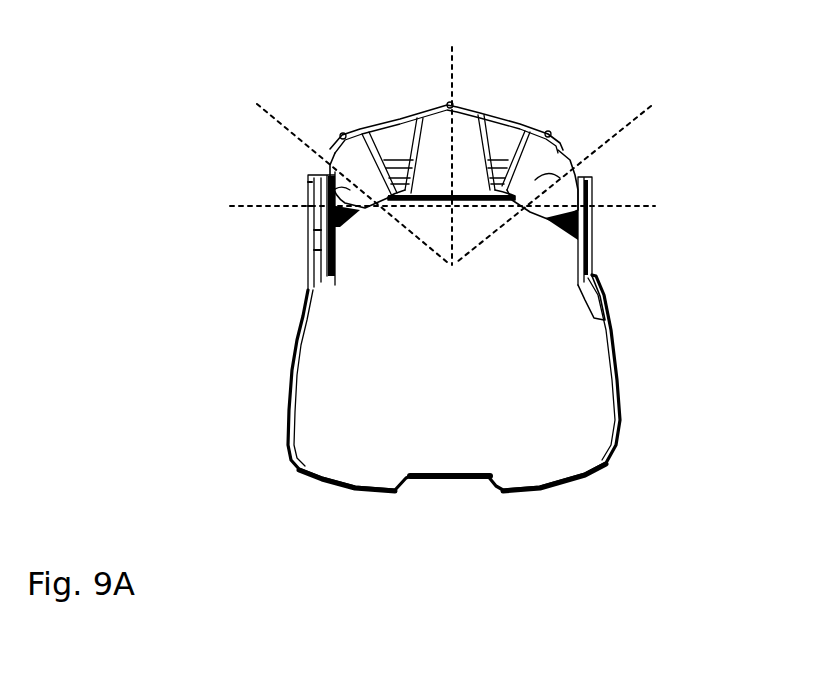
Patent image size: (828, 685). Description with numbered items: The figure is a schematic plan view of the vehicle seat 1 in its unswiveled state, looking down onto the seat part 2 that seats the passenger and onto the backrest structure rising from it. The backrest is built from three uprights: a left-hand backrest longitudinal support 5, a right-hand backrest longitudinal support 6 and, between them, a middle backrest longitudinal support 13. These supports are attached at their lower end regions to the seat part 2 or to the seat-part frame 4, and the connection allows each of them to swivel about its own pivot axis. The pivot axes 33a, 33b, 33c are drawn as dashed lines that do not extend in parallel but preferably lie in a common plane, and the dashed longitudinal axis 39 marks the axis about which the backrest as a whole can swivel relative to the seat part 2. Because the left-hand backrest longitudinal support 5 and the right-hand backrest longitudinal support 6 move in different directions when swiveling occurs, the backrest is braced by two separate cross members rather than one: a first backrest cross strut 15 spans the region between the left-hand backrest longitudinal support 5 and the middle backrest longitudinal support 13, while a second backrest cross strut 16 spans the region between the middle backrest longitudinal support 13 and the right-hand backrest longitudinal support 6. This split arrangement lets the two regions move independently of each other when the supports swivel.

The vehicle seat 1 is at (661, 34).
The seat part 2 is at (328, 453).
The seat-part frame 4 is at (590, 233).
The left-hand backrest longitudinal support 5 is at (313, 182).
The right-hand backrest longitudinal support 6 is at (585, 177).
The middle backrest longitudinal support 13 is at (419, 130).
The first backrest cross strut 15 is at (381, 128).
The second backrest cross strut 16 is at (498, 121).
The pivot axis 33a is at (258, 110).
The pivot axis 33b is at (450, 64).
The pivot axis 33c is at (625, 127).
The longitudinal axis 39 is at (243, 207).